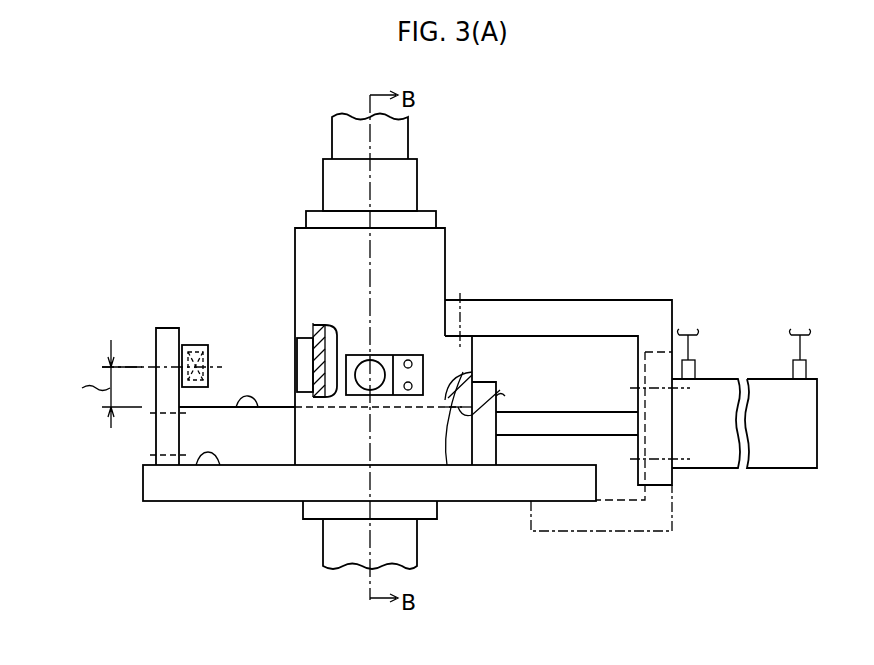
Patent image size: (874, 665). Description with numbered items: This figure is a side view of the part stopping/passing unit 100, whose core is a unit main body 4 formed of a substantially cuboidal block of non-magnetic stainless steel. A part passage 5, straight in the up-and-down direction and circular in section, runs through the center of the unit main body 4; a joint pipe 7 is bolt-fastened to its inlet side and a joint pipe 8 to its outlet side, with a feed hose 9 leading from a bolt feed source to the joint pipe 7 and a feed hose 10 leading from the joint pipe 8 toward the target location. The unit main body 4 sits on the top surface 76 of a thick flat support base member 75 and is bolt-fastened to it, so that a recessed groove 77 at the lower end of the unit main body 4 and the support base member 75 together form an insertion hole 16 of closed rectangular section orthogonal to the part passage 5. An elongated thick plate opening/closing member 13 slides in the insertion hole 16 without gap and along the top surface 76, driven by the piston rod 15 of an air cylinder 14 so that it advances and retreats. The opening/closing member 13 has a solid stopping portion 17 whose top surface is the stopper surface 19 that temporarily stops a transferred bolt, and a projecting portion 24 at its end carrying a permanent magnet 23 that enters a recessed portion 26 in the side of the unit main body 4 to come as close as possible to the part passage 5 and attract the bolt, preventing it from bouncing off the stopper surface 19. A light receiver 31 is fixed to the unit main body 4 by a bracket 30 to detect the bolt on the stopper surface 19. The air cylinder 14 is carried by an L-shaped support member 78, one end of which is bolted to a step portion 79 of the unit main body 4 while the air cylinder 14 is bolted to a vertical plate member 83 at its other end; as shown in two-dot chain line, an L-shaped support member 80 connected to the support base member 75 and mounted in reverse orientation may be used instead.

The part stopping/passing unit 100 is at (591, 210).
The unit main body 4 is at (456, 240).
The part passage 5 is at (336, 326).
The joint pipe 7 is at (417, 183).
The joint pipe 8 is at (303, 508).
The feed hose 9 is at (332, 136).
The feed hose 10 is at (323, 553).
The opening/closing member 13 is at (229, 395).
The air cylinder 14 is at (763, 379).
The piston rod 15 is at (582, 412).
The insertion hole 16 is at (325, 408).
The stopping portion 17 is at (277, 415).
The stopper surface 19 is at (237, 407).
The permanent magnet 23 is at (200, 350).
The projecting portion 24 is at (192, 345).
The recessed portion 26 is at (297, 348).
The bracket 30 is at (407, 353).
The light receiver 31 is at (380, 362).
The support base member 75 is at (477, 490).
The top surface 76 is at (196, 460).
The recessed groove 77 is at (498, 397).
The support member 78 is at (588, 300).
The step portion 79 is at (467, 333).
The support member 80 is at (562, 533).
The vertical plate member 83 is at (662, 420).